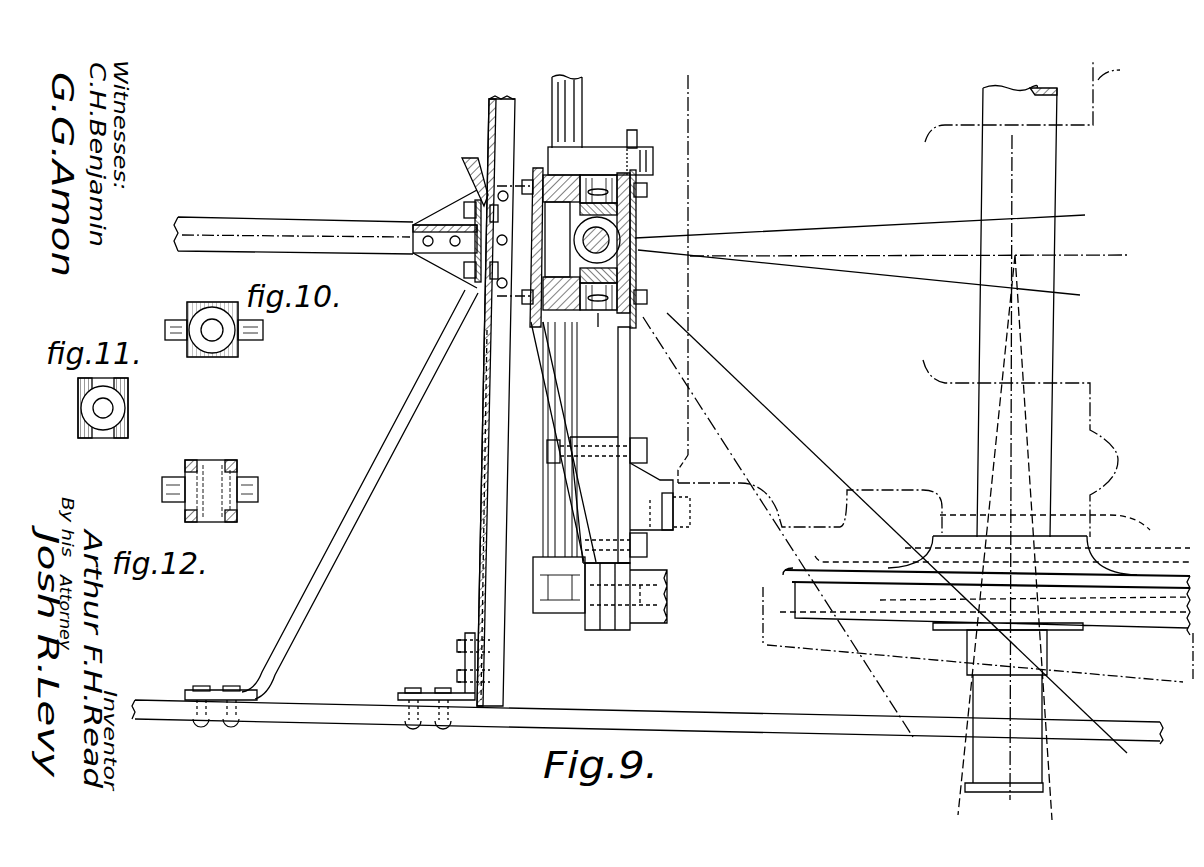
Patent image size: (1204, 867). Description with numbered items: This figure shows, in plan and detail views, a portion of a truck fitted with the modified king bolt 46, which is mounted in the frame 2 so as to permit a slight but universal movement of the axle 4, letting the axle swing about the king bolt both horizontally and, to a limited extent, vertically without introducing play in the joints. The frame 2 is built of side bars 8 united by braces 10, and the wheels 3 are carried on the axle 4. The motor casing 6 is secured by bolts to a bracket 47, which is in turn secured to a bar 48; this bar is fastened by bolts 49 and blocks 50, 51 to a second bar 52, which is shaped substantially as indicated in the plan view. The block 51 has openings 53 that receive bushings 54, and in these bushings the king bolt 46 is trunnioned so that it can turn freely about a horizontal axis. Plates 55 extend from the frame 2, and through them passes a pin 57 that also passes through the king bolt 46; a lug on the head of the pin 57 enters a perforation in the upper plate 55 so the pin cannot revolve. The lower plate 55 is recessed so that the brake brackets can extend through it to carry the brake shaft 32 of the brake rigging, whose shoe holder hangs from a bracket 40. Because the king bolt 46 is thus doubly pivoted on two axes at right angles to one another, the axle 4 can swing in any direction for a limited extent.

In FIG. 9, the frame 2 is at (482, 502).
In FIG. 9, the wheels 3 is at (917, 565).
In FIG. 9, the axles 4 is at (977, 444).
In FIG. 9, the motor casing 6 is at (810, 490).
In FIG. 9, the side bars 8 is at (777, 720).
In FIG. 9, the braces 10 is at (331, 508).
In FIG. 9, the brake shaft 32 is at (545, 512).
In FIG. 9, the bracket 40 is at (660, 618).
In FIG. 10, the king bolt 46 is at (183, 380).
In FIG. 11, the king bolt 46 is at (129, 410).
In FIG. 12, the king bolt 46 is at (197, 458).
In FIG. 9, the bracket 47 is at (660, 496).
In FIG. 9, the bar 48 is at (630, 392).
In FIG. 9, the bolts 49 is at (647, 192).
In FIG. 9, the block 50 is at (600, 500).
In FIG. 9, the block 51 is at (604, 340).
In FIG. 9, the second bar 52 is at (553, 382).
In FIG. 9, the openings 53 is at (602, 188).
In FIG. 9, the bushings 54 is at (583, 240).
In FIG. 9, the plates 55 is at (455, 222).
In FIG. 9, the pin 57 is at (612, 243).